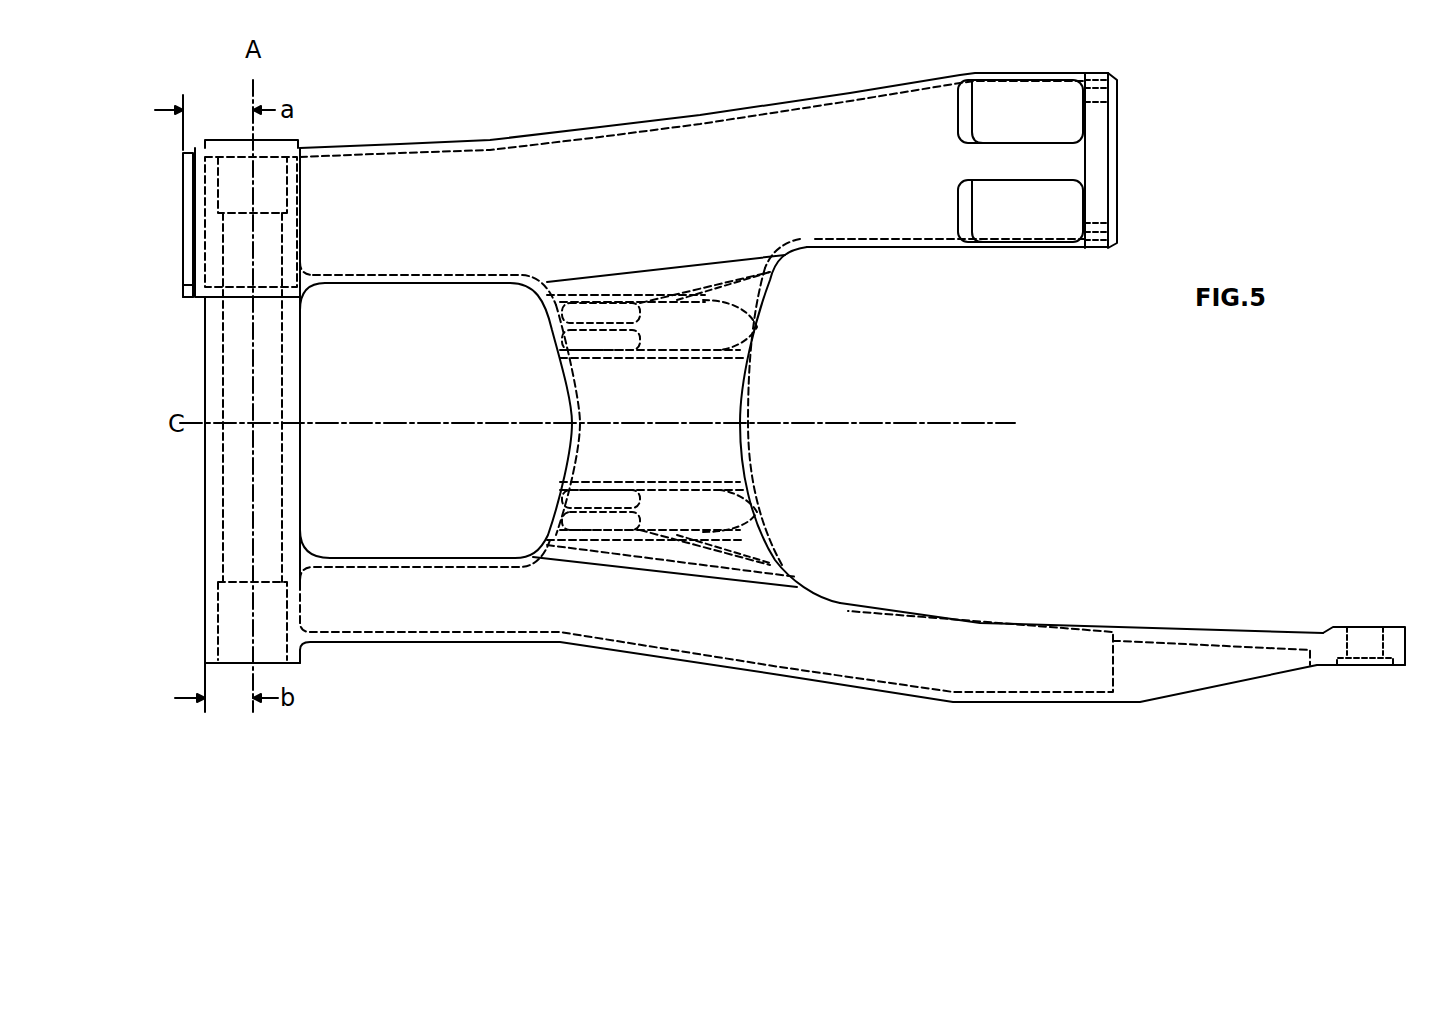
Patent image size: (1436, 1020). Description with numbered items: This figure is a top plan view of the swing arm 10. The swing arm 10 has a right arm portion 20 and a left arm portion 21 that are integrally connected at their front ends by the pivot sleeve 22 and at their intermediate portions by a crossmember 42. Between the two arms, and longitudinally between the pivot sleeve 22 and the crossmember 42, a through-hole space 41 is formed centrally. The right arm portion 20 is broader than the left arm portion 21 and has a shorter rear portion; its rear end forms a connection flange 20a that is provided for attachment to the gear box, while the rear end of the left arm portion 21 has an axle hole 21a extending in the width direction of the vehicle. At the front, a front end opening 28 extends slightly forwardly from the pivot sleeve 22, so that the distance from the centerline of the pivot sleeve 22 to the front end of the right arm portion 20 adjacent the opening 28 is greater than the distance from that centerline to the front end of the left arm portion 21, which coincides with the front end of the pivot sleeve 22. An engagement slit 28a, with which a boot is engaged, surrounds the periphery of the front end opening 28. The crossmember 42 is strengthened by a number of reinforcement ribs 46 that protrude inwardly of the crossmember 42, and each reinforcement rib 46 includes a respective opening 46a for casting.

The swing arm 10 is at (537, 108).
The right arm portion 20 is at (390, 148).
The connection flange 20a is at (1100, 82).
The left arm portion 21 is at (402, 622).
The axle hole 21a is at (1370, 648).
The pivot sleeve 22 is at (218, 505).
The front end opening 28 is at (190, 188).
The engagement slit 28a is at (190, 297).
The through-hole space 41 is at (392, 403).
The crossmember 42 is at (713, 450).
The reinforcement ribs 46 is at (760, 327).
The opening for casting 46a is at (565, 333).